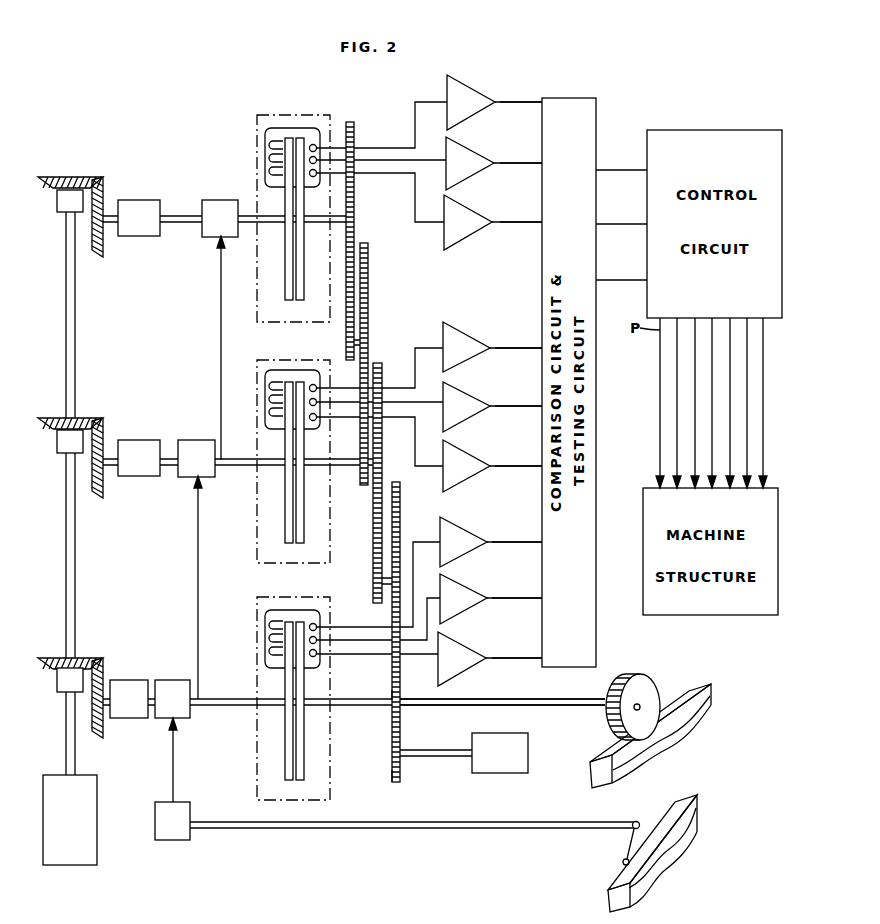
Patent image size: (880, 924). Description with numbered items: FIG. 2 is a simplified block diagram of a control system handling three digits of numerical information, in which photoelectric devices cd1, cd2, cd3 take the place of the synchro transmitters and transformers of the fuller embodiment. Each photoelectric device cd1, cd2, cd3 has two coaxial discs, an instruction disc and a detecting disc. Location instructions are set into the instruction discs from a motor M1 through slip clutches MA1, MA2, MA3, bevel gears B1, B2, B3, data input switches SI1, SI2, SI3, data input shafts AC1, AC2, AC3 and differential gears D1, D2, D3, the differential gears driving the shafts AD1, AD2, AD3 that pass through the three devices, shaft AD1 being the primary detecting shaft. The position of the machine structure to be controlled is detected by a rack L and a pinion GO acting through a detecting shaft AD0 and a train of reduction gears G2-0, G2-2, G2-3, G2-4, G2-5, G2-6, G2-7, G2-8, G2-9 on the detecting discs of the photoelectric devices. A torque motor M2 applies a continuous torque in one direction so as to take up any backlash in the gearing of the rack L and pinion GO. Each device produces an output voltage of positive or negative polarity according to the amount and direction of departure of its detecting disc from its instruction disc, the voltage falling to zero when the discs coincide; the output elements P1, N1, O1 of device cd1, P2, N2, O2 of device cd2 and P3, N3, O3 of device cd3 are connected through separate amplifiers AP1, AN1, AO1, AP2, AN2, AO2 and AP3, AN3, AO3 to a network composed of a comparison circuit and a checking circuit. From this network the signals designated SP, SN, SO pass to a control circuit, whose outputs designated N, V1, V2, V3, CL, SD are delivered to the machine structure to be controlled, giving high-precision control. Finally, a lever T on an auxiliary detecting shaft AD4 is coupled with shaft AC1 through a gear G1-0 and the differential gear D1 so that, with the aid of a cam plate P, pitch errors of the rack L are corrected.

The bevel gear B1 is at (64, 681).
The bevel gear B2 is at (64, 441).
The bevel gear B3 is at (54, 178).
The slip clutch MA1 is at (60, 684).
The slip clutch MA2 is at (60, 446).
The slip clutch MA3 is at (60, 204).
The data input switch SI1 is at (129, 699).
The data input switch SI2 is at (139, 458).
The data input switch SI3 is at (139, 218).
The data input shaft AC1 is at (153, 708).
The data input shaft AC2 is at (170, 466).
The data input shaft AC3 is at (180, 224).
The differential gear D1 is at (172, 699).
The differential gear D2 is at (196, 569).
The differential gear D3 is at (220, 330).
The primary detecting shaft AD1 is at (447, 703).
The drive shaft AD2 is at (337, 466).
The drive shaft AD3 is at (338, 214).
The auxiliary detecting shaft AD4 is at (534, 831).
The detecting shaft AD0 is at (600, 707).
The photoelectric device cd1 is at (263, 612).
The photoelectric device cd2 is at (265, 372).
The photoelectric device cd3 is at (265, 127).
The reduction gear G2-0 is at (392, 766).
The reduction gear G2-2 is at (381, 366).
The reduction gear G2-3 is at (356, 220).
The reduction gear G2-4 is at (392, 694).
The reduction gear G2-5 is at (401, 536).
The reduction gear G2-6 is at (378, 598).
The reduction gear G2-7 is at (367, 488).
The reduction gear G2-8 is at (368, 322).
The reduction gear G2-9 is at (346, 342).
The amplifier AP1 is at (491, 542).
The amplifier AP2 is at (492, 347).
The amplifier AP3 is at (494, 102).
The amplifier AN1 is at (491, 599).
The amplifier AN2 is at (492, 407).
The amplifier AN3 is at (494, 163).
The amplifier AO1 is at (490, 659).
The amplifier AO2 is at (492, 466).
The amplifier AO3 is at (493, 222).
The element P P1 is at (524, 541).
The element P P2 is at (531, 347).
The element P P3 is at (532, 101).
The element N N1 is at (523, 597).
The element N N2 is at (527, 404).
The element N N3 is at (529, 162).
The element O O1 is at (522, 655).
The element O O2 is at (527, 463).
The element O O3 is at (531, 221).
The positive sum signal SP is at (621, 161).
The negative sum signal SN is at (621, 215).
The zero sum signal SO is at (621, 271).
The element N is at (677, 338).
The control output V1 is at (695, 352).
The control output V2 is at (712, 368).
The control output V3 is at (730, 393).
The control output CL is at (747, 417).
The control output SD is at (763, 438).
The motor M1 is at (70, 820).
The torque motor M2 is at (464, 753).
The gear G1-0 is at (174, 779).
The pinion GO is at (647, 700).
The rack L is at (712, 709).
The lever T is at (624, 849).
The cam plate P is at (690, 838).